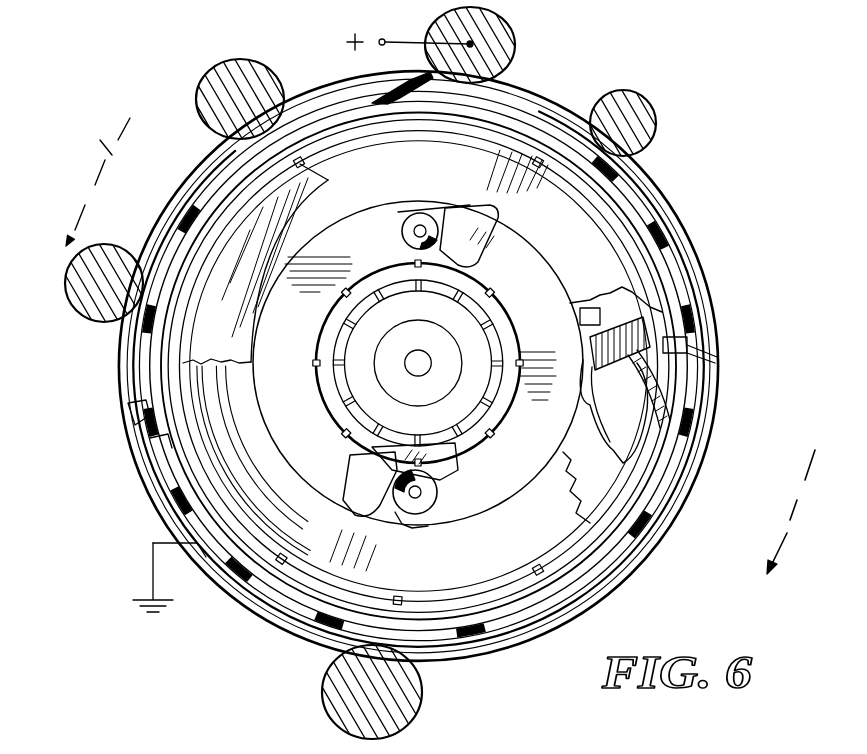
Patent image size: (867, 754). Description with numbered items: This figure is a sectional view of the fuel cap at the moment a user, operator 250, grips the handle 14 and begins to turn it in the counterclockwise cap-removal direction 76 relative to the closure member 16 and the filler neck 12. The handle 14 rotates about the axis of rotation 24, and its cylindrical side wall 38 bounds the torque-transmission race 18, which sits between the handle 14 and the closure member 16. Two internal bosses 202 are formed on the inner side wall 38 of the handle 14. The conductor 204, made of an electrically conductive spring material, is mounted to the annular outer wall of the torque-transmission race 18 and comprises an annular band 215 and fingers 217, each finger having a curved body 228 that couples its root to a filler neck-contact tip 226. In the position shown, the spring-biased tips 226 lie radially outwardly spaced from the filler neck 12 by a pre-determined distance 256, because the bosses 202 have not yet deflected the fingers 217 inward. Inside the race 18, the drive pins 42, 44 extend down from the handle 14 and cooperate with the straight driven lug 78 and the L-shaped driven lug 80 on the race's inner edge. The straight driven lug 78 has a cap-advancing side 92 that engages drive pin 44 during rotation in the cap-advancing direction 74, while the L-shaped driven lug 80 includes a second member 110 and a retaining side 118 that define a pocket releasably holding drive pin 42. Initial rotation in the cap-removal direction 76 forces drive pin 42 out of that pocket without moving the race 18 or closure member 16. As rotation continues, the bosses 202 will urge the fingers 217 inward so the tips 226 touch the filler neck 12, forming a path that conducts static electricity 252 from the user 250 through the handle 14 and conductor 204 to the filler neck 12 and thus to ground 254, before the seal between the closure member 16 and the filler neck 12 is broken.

The filler neck 12 is at (655, 386).
The handle 14 is at (585, 587).
The closure member 16 is at (497, 492).
The torque-transmission race 18 is at (333, 167).
The axis of rotation 24 is at (418, 363).
The cylindrical side wall 38 is at (380, 103).
The drive pin 42 is at (432, 490).
The drive pin 44 is at (400, 230).
The cap-advancing direction 74 is at (800, 505).
The cap-removal direction 76 is at (92, 182).
The straight driven lug 78 is at (468, 220).
The L-shaped driven lug 80 is at (357, 497).
The cap-advancing side 92 is at (413, 205).
The second member 110 is at (366, 450).
The retaining side 118 is at (397, 530).
The internal bosses 202 is at (433, 118).
The conductor 204 is at (647, 257).
The annular band 215 is at (627, 222).
The fingers 217 is at (222, 198).
The filler neck-contact tip 226 is at (132, 410).
The curved body 228 is at (173, 283).
The operator 250 is at (214, 80).
The static electricity 252 is at (410, 28).
The ground 254 is at (153, 575).
The pre-determined distance 256 is at (220, 452).